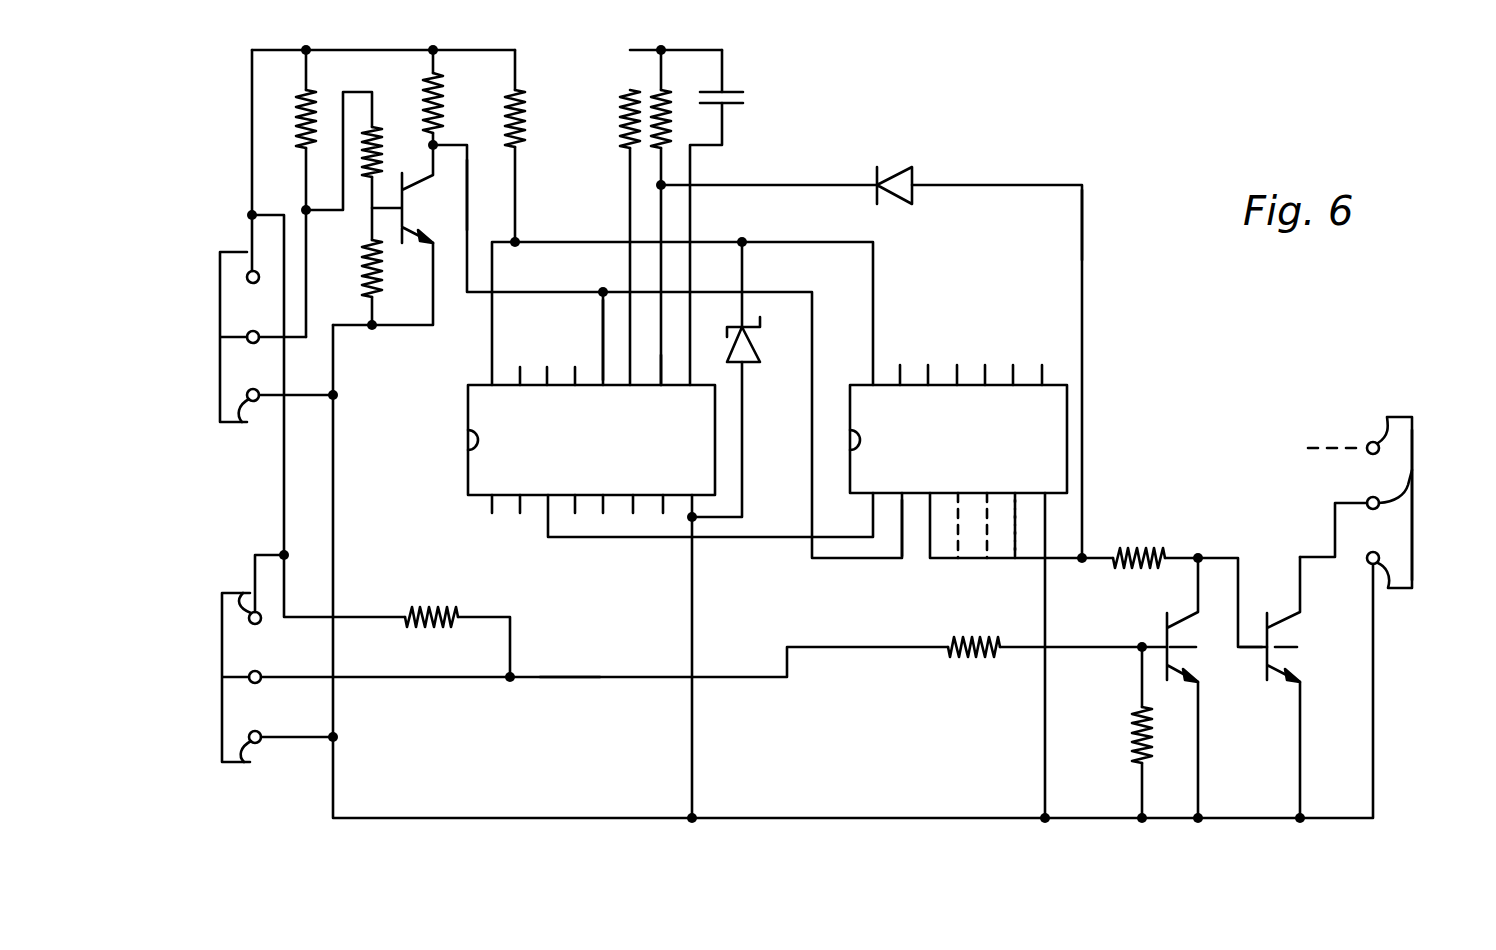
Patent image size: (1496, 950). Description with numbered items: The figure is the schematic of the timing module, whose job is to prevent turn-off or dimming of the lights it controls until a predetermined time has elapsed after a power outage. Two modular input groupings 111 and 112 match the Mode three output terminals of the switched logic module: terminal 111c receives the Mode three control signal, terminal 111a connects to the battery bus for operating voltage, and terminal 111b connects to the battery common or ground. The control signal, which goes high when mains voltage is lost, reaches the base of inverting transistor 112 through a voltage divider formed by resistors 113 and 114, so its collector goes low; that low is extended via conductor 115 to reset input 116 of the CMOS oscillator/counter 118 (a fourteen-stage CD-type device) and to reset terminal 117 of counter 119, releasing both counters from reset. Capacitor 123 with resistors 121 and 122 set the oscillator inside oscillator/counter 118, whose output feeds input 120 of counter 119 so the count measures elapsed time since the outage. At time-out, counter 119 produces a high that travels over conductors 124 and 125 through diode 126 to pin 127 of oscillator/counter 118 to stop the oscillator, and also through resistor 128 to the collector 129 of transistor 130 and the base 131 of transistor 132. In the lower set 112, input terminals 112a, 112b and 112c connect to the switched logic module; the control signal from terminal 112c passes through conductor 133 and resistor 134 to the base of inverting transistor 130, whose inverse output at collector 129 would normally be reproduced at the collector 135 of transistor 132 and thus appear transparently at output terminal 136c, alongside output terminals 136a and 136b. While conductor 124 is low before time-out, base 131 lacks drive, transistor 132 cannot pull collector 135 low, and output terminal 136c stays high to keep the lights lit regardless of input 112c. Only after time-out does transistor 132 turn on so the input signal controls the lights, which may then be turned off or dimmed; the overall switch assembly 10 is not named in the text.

The switch assembly 10 is at (1423, 523).
The modular input grouping 111 is at (205, 303).
The terminal 111a is at (250, 271).
The terminal 111b is at (247, 422).
The terminal 111c is at (218, 333).
The transistor 112 is at (205, 643).
The input terminal 112a is at (252, 612).
The input terminal 112b is at (247, 762).
The input terminal 112c is at (218, 674).
The resistor 113 is at (375, 127).
The resistor 114 is at (382, 285).
The conductor 115 is at (467, 197).
The reset terminal 116 is at (603, 340).
The reset terminal 117 is at (904, 540).
The oscillator/counter 118 is at (468, 410).
The counter 119 is at (848, 412).
The input 120 is at (870, 528).
The resistor 121 is at (630, 124).
The resistor 122 is at (640, 148).
The capacitor 123 is at (734, 92).
The conductor 124 is at (1015, 560).
The conductor 125 is at (1082, 222).
The diode 126 is at (893, 172).
The pin 127 is at (661, 366).
The resistor 128 is at (1117, 556).
The collector 129 is at (1200, 580).
The transistor 130 is at (1183, 648).
The base 131 is at (1253, 648).
The transistor 132 is at (1287, 648).
The conductor 133 is at (568, 678).
The resistor 134 is at (970, 647).
The collector 135 is at (1287, 613).
The output terminal 136a is at (1389, 418).
The output terminal 136b is at (1390, 588).
The output terminal 136c is at (1412, 470).